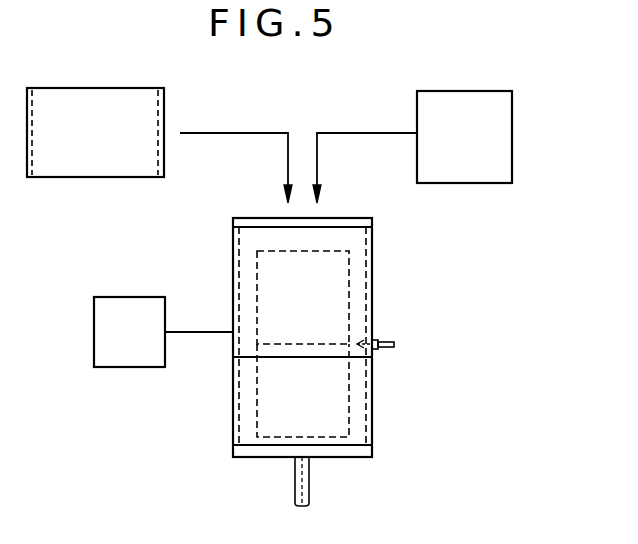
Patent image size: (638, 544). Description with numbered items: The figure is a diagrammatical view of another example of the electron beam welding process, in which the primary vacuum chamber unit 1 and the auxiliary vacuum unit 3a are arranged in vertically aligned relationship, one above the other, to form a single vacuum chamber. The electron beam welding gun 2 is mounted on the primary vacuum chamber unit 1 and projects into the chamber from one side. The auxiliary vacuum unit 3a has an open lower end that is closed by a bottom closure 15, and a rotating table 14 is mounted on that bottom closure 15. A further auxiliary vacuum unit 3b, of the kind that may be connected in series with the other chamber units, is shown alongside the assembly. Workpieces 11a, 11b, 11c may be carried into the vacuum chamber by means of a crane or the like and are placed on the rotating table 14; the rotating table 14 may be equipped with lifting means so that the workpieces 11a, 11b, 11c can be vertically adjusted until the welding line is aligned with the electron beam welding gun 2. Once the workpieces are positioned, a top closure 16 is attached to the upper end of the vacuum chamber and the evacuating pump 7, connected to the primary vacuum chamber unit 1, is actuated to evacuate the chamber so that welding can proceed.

The primary vacuum chamber unit 1 is at (372, 278).
The electron beam welding gun 2 is at (394, 347).
The auxiliary vacuum unit 3a is at (372, 410).
The auxiliary vacuum unit 3b is at (80, 178).
The evacuating pump 7 is at (123, 368).
The workpiece 11a is at (257, 413).
The workpiece 11b is at (257, 283).
The workpiece 11c is at (512, 163).
The rotating table 14 is at (290, 437).
The bottom closure 15 is at (333, 458).
The top closure 16 is at (363, 223).